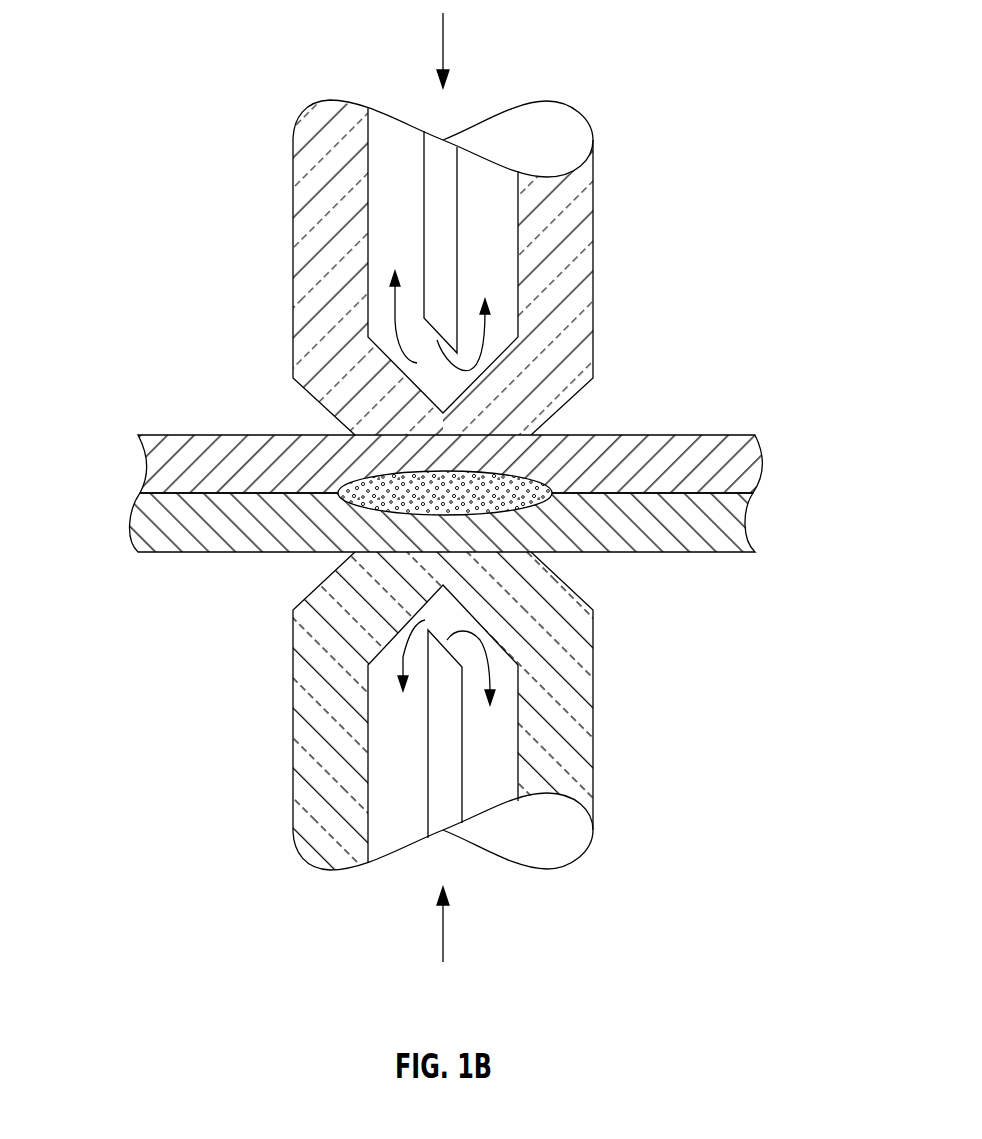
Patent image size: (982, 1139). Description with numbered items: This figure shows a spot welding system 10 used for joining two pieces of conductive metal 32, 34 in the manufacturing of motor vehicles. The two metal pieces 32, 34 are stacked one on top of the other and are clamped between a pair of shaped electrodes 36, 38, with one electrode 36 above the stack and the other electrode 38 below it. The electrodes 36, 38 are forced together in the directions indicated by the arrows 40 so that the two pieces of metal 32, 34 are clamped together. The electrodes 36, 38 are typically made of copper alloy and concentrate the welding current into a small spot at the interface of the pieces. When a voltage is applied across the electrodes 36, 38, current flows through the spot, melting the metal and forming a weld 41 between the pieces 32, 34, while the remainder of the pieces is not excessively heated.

The spot welding system 10 is at (793, 369).
The piece of conductive metal 32 is at (134, 527).
The piece of conductive metal 34 is at (151, 468).
The shaped electrode 36 is at (291, 238).
The shaped electrode 38 is at (291, 752).
The arrows 40 is at (444, 40).
The weld 41 is at (532, 477).